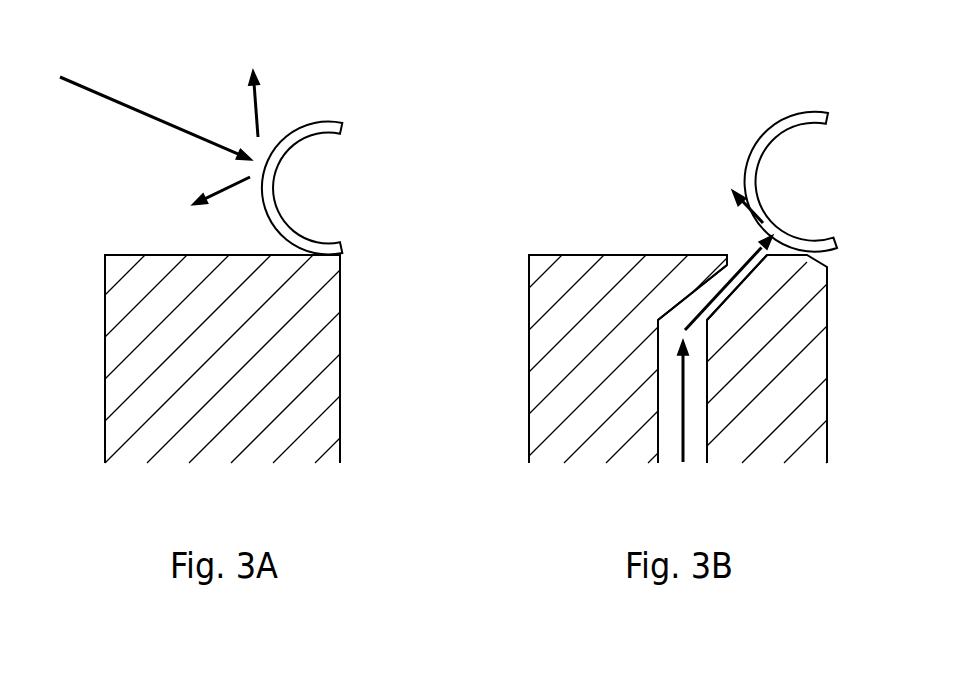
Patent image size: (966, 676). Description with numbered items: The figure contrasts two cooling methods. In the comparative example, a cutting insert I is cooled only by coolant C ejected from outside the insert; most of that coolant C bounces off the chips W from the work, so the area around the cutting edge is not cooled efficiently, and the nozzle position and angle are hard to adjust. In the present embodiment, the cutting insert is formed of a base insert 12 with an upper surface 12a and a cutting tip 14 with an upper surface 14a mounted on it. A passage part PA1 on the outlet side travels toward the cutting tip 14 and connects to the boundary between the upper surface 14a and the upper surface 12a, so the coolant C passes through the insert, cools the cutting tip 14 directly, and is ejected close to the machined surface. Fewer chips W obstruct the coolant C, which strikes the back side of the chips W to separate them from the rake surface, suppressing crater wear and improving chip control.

In FIG. 3A, the coolant C is at (125, 103).
In FIG. 3B, the coolant C is at (748, 253).
In FIG. 3A, the chips W is at (322, 121).
In FIG. 3B, the chips W is at (803, 112).
In FIG. 3A, the cutting insert I is at (222, 359).
In FIG. 3B, the base insert 12 is at (565, 410).
In FIG. 3B, the upper surface 12a is at (597, 255).
In FIG. 3B, the cutting tip 14 is at (803, 412).
In FIG. 3B, the upper surface 14a is at (787, 240).
In FIG. 3B, the passage part PA1 is at (737, 297).